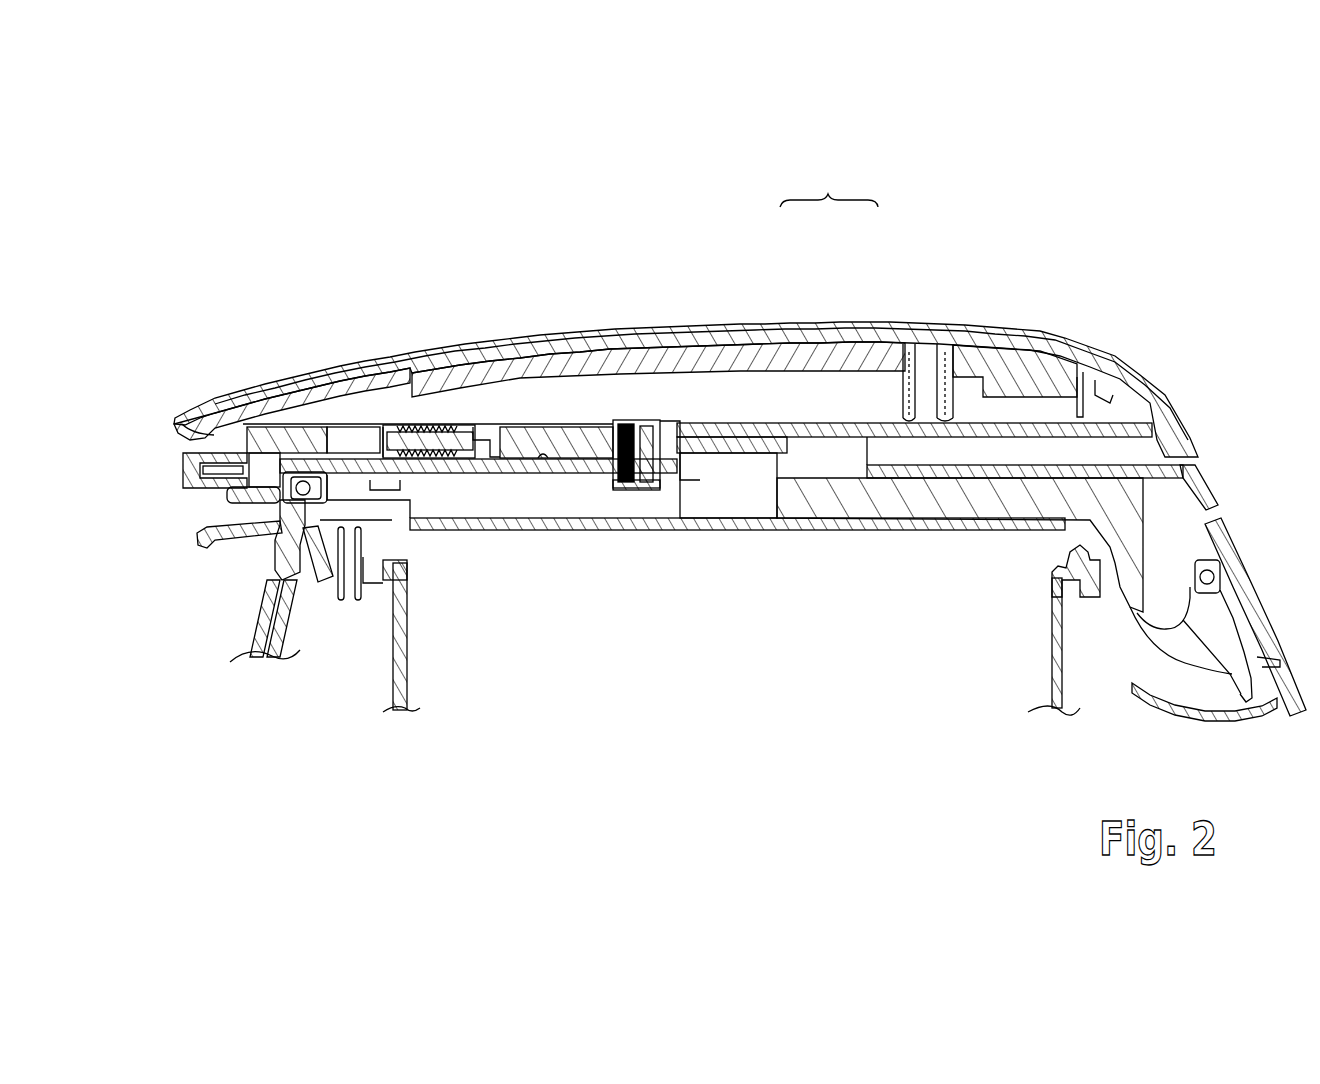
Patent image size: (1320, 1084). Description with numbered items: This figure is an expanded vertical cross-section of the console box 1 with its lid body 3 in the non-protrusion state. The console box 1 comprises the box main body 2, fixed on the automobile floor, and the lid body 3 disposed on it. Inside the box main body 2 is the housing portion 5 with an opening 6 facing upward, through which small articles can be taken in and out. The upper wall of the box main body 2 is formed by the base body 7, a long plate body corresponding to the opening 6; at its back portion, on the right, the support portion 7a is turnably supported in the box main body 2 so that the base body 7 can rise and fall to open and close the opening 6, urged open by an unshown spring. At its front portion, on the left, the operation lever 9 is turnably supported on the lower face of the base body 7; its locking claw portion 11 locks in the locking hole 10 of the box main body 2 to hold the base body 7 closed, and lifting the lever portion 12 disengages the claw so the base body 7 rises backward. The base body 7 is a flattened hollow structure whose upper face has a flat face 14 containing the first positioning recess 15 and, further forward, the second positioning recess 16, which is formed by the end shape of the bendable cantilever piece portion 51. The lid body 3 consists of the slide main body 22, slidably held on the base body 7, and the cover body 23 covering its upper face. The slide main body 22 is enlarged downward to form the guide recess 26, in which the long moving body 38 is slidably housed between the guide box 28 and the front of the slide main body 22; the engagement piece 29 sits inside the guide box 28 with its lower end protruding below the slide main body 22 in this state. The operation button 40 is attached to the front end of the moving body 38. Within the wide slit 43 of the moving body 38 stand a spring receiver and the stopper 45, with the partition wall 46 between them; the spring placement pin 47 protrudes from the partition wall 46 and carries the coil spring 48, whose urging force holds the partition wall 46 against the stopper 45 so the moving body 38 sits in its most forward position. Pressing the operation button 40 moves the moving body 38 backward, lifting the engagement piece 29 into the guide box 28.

The console box 1 is at (1120, 188).
The box main body 2 is at (1268, 613).
The lid body 3 is at (829, 185).
The housing portion 5 is at (1055, 655).
The opening 6 is at (1067, 537).
The base body 7 is at (733, 496).
The support portion 7a is at (1212, 566).
The operation lever 9 is at (195, 548).
The locking hole 10 is at (292, 574).
The locking claw portion 11 is at (275, 572).
The lever portion 12 is at (205, 530).
The flat face 14 is at (560, 476).
The first positioning recess 15 is at (636, 492).
The second positioning recess 16 is at (398, 494).
The slide main body 22 is at (838, 422).
The cover body 23 is at (776, 316).
The guide recess 26 is at (304, 400).
The guide box 28 is at (650, 424).
The engagement piece 29 is at (620, 424).
The moving body 38 is at (560, 420).
The operation button 40 is at (190, 470).
The wide slit 43 is at (495, 438).
The stopper 45 is at (330, 440).
The partition wall 46 is at (378, 442).
The spring placement pin 47 is at (447, 430).
The coil spring 48 is at (476, 440).
The cantilever piece portion 51 is at (478, 475).